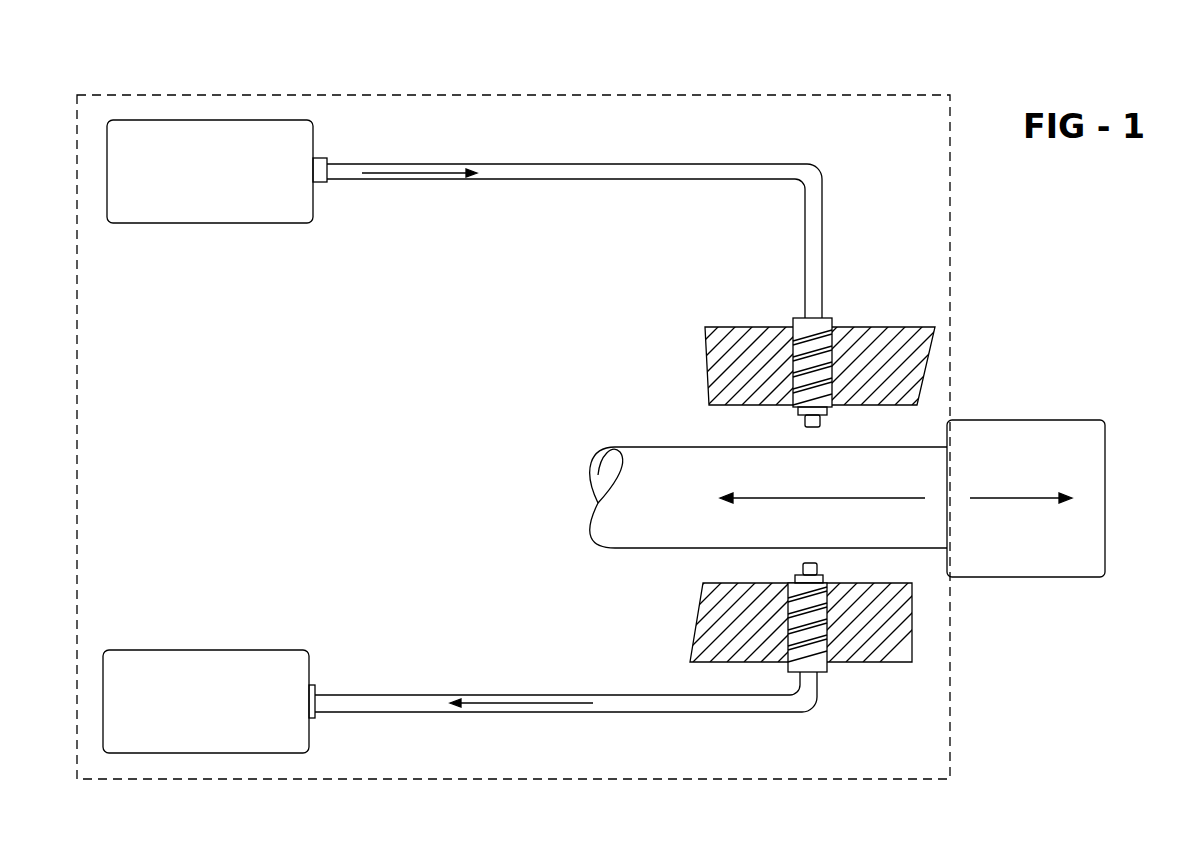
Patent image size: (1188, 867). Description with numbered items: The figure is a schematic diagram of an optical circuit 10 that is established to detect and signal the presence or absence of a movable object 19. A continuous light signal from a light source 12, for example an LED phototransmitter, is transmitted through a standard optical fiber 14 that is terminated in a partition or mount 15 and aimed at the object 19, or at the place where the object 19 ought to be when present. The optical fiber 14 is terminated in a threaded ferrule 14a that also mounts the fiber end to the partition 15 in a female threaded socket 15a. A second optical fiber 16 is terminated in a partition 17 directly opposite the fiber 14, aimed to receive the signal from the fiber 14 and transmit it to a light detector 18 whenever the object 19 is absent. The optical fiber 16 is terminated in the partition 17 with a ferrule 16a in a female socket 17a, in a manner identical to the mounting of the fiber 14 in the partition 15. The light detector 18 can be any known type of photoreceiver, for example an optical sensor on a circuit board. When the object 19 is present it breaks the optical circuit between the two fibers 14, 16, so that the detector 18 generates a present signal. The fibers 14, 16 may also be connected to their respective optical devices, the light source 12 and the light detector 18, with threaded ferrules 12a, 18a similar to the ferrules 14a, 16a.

The optical circuit 10 is at (770, 95).
The light source 12 is at (285, 128).
The threaded ferrule 12a is at (323, 160).
The optical fiber 14 is at (598, 167).
The threaded ferrule 14a is at (830, 320).
The partition 15 is at (745, 332).
The female threaded socket 15a is at (793, 364).
The second optical fiber 16 is at (663, 702).
The ferrule 16a is at (828, 591).
The partition 17 is at (880, 662).
The female socket 17a is at (785, 628).
The light detector 18 is at (155, 662).
The threaded ferrule 18a is at (314, 683).
The movable object 19 is at (993, 418).